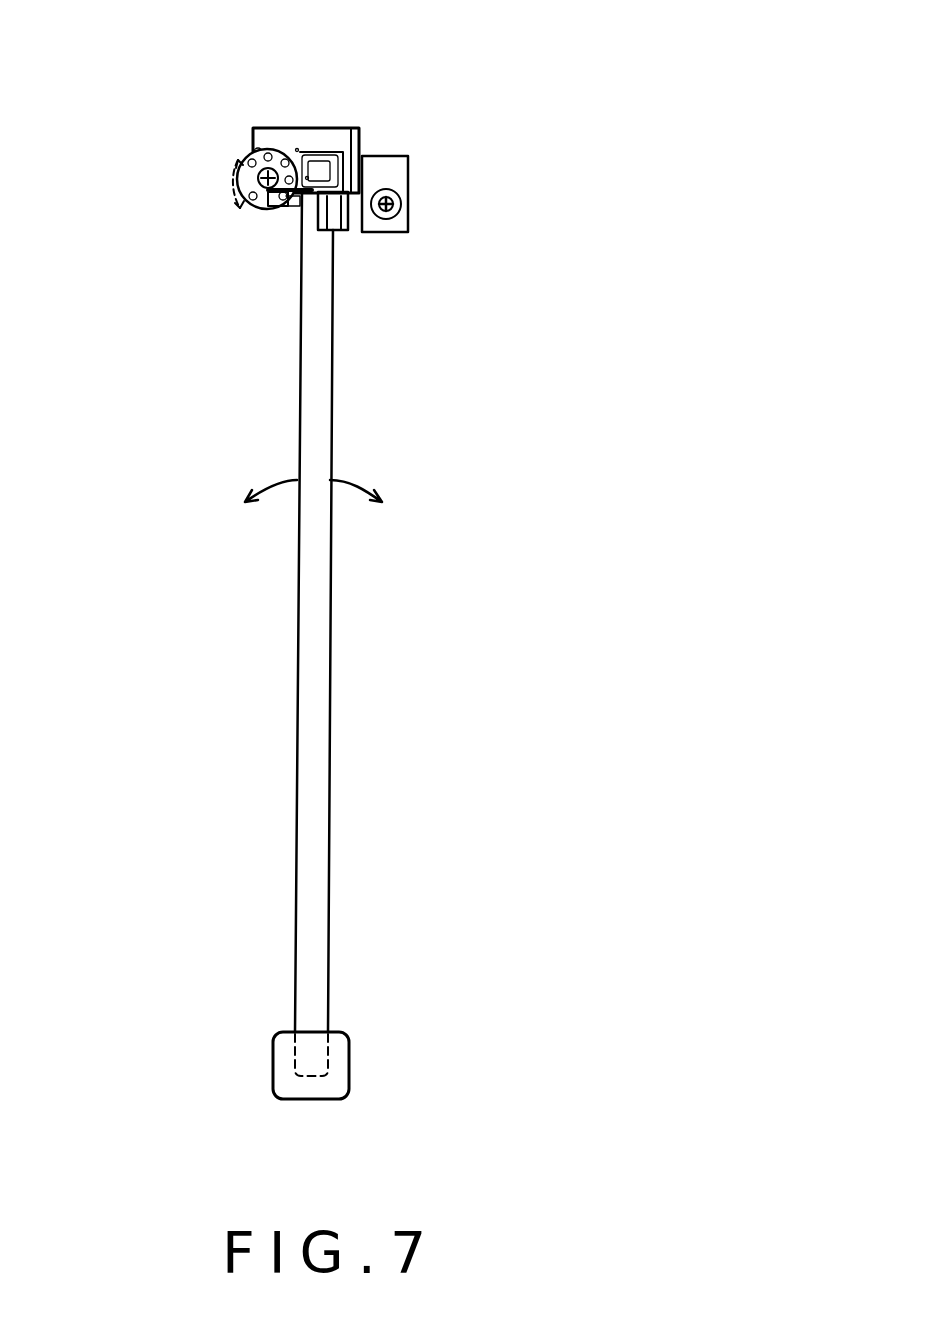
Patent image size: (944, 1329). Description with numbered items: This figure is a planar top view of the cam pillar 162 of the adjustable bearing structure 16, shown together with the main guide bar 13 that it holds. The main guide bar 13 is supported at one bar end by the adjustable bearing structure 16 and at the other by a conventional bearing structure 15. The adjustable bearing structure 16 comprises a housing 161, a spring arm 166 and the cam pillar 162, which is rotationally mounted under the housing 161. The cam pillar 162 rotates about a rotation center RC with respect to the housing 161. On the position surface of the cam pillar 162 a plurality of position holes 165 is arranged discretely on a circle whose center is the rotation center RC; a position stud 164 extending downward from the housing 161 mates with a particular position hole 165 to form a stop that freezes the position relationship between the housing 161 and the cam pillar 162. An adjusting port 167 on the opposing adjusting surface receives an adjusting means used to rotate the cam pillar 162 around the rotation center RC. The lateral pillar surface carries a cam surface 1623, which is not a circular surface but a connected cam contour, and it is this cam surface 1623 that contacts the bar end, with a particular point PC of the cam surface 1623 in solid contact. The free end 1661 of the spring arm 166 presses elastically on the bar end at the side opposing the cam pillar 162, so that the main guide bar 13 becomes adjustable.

The main guide bar 13 is at (312, 672).
The bearing structure 15 is at (343, 1060).
The adjustable bearing structure 16 is at (470, 127).
The housing 161 is at (273, 143).
The cam pillar 162 is at (277, 215).
The cam surface 1623 is at (290, 217).
The position stud 164 is at (277, 210).
The position holes 165 is at (240, 175).
The spring arm 166 is at (357, 222).
The free end 1661 is at (333, 233).
The adjusting port 167 is at (256, 146).
The rotation center RC is at (298, 147).
The particular point PC is at (308, 177).